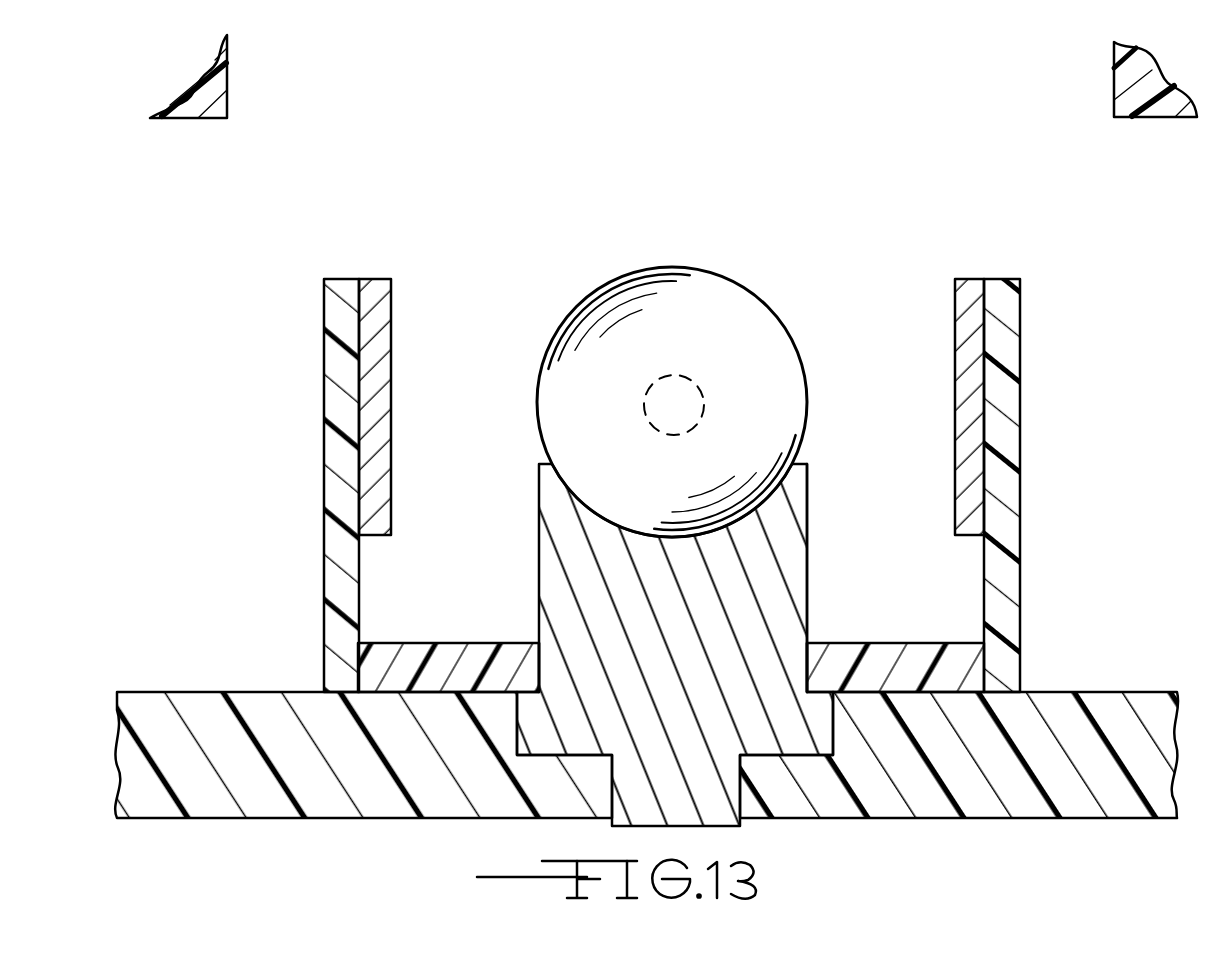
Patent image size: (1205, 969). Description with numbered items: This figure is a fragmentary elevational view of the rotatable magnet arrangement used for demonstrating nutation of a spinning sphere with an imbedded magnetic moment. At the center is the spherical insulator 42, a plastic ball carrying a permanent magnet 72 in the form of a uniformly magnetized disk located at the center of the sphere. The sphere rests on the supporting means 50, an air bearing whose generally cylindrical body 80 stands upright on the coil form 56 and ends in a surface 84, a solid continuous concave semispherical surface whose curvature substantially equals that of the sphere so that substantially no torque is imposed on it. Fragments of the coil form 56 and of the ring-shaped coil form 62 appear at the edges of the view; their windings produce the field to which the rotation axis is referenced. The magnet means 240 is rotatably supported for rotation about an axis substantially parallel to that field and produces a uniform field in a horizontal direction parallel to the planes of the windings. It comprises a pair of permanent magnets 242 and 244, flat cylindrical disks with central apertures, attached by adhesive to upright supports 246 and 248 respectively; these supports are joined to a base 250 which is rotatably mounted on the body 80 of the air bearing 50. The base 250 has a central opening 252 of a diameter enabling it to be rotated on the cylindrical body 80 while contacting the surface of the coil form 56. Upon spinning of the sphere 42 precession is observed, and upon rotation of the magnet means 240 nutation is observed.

The spherical insulator 42 is at (607, 310).
The permanent magnet 72 is at (705, 392).
The coil form 62 is at (203, 98).
The magnet means 240 is at (687, 475).
The permanent magnet 242 is at (392, 388).
The upright support 246 is at (335, 452).
The permanent magnet 244 is at (963, 444).
The upright support 248 is at (1007, 490).
The base 250 is at (417, 655).
The central opening 252 is at (537, 670).
The supporting means 50 is at (677, 635).
The cylindrical body 80 is at (565, 546).
The surface 84 is at (803, 507).
The coil form 56 is at (275, 808).